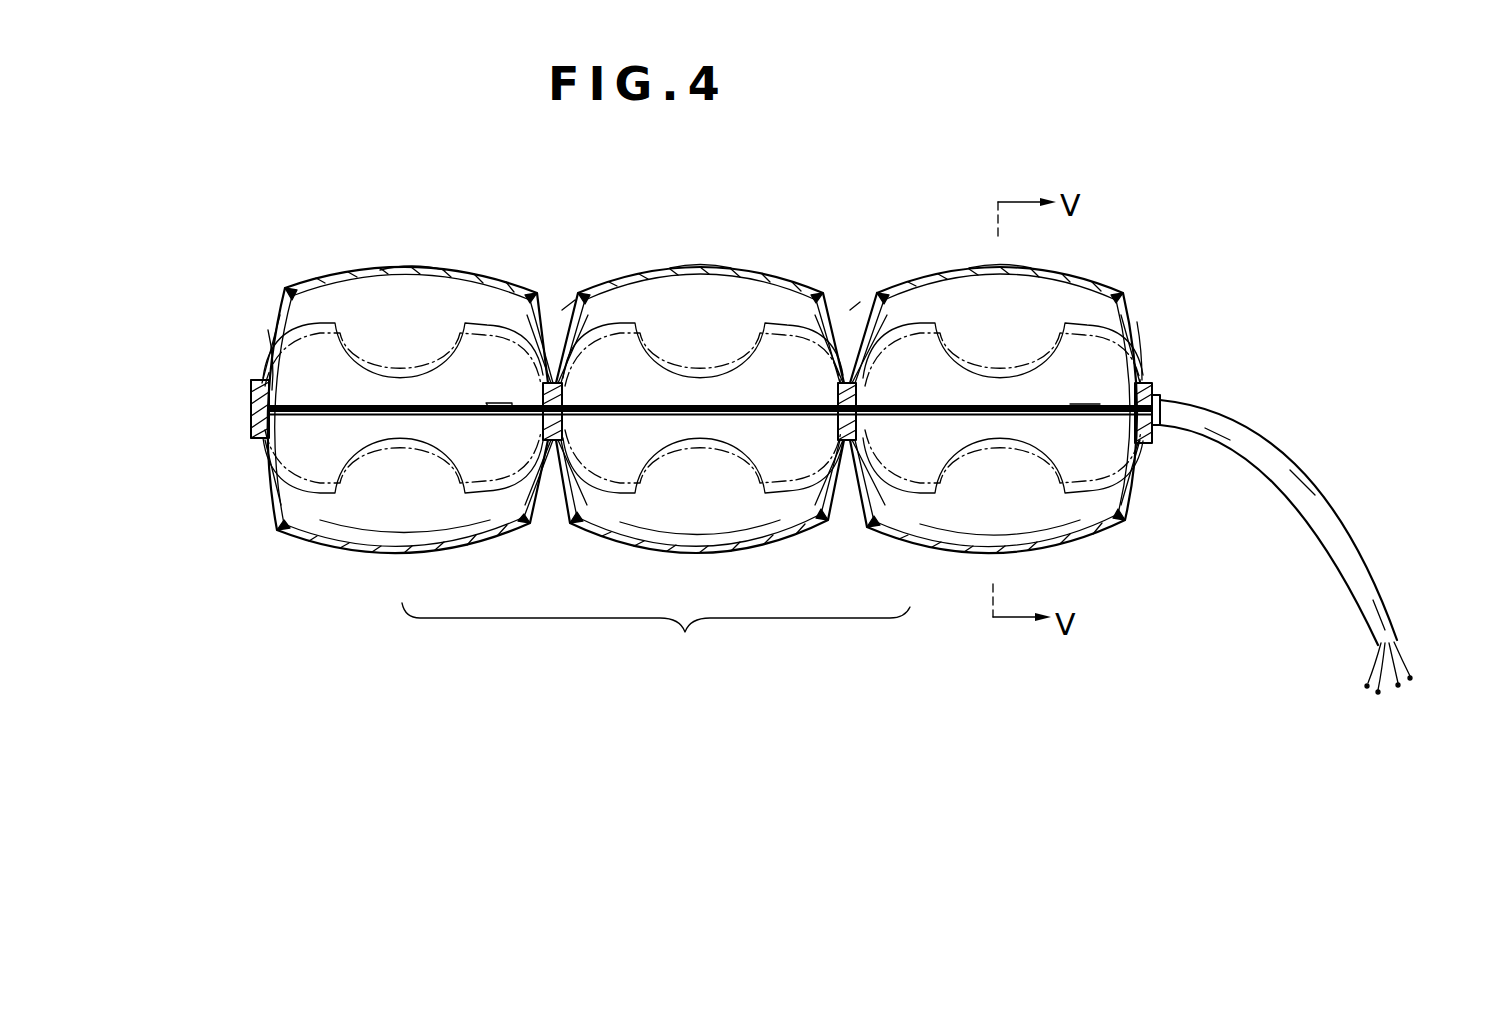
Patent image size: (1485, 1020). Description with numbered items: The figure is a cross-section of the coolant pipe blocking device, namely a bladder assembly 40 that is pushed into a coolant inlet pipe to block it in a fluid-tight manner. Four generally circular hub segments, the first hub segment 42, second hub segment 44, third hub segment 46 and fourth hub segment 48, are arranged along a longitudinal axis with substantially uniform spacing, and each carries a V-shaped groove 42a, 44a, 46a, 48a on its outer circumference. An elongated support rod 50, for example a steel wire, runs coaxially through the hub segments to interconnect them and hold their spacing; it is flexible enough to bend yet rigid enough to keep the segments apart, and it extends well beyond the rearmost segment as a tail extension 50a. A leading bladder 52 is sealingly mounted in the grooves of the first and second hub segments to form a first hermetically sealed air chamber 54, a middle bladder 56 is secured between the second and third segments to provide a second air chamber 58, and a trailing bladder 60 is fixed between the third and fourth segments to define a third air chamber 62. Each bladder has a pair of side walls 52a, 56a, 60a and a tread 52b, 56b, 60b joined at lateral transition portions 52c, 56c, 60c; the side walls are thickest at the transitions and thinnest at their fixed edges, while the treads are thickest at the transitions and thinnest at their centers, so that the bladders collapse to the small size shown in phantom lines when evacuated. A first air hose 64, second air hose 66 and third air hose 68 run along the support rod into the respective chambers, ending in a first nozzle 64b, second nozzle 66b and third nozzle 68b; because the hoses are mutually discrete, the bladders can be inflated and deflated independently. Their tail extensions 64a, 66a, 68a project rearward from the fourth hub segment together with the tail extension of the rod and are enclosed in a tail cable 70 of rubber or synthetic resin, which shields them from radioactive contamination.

The bladder assembly 40 is at (673, 672).
The first hub segment 42 is at (250, 410).
The V-shaped groove 42a is at (250, 385).
The second hub segment 44 is at (548, 424).
The V-shaped groove 44a is at (545, 385).
The third hub segment 46 is at (842, 425).
The V-shaped groove 46a is at (838, 386).
The fourth hub segment 48 is at (1138, 425).
The V-shaped groove 48a is at (1156, 392).
The elongated support rod 50 is at (300, 425).
The tail extension 50a is at (1378, 696).
The leading bladder 52 is at (366, 252).
The side wall 52a is at (268, 330).
The tread 52b is at (412, 268).
The lateral transition portion 52c is at (285, 290).
The first air chamber 54 is at (396, 528).
The middle bladder 56 is at (671, 252).
The side wall 56a is at (562, 310).
The tread 56b is at (705, 268).
The lateral transition portion 56c is at (580, 292).
The second air chamber 58 is at (700, 528).
The trailing bladder 60 is at (948, 252).
The side wall 60a is at (850, 310).
The tread 60b is at (993, 268).
The lateral transition portion 60c is at (867, 300).
The third air chamber 62 is at (918, 528).
The first air hose 64 is at (600, 404).
The tail extension 64a is at (1408, 675).
The first nozzle 64b is at (486, 392).
The second air hose 66 is at (897, 418).
The tail extension 66a is at (1368, 680).
The second nozzle 66b is at (782, 418).
The third air hose 68 is at (1105, 404).
The tail extension 68a is at (1398, 672).
The third nozzle 68b is at (1085, 392).
The tail cable 70 is at (1343, 532).